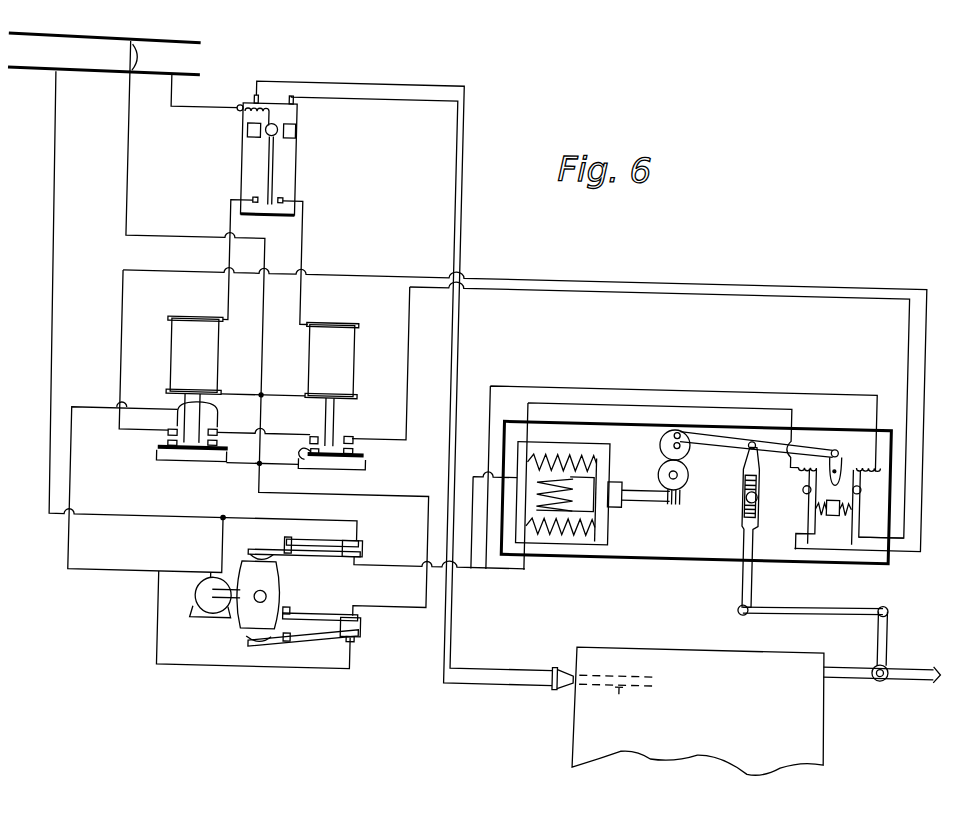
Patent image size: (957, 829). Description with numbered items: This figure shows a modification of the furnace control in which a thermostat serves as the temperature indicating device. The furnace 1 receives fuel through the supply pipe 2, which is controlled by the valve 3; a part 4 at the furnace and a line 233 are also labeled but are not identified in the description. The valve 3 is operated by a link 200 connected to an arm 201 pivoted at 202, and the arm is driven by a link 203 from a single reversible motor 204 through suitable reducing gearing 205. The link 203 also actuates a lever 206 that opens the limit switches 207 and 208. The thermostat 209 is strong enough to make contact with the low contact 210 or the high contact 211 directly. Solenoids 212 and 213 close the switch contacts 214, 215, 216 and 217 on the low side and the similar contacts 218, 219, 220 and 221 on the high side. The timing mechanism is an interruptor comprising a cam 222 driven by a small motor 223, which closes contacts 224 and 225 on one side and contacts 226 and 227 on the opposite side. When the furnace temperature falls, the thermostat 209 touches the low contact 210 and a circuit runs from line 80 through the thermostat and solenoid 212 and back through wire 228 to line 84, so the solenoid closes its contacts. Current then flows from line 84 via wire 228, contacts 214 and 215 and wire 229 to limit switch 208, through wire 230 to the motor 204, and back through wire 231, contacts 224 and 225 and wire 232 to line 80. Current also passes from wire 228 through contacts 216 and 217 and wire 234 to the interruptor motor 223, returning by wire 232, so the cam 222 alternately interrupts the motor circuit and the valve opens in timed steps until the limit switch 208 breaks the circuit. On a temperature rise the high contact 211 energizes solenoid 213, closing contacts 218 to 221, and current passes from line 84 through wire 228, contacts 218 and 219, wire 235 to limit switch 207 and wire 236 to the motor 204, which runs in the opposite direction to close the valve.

The furnace 1 is at (699, 712).
The supply pipe 2 is at (852, 668).
The valve 3 is at (912, 685).
The burner nozzle 4 is at (584, 694).
The line 80 is at (36, 82).
The line 84 is at (182, 46).
The link 200 is at (813, 627).
The arm 201 is at (746, 542).
The pivot 202 is at (748, 495).
The link 203 is at (745, 441).
The single reversible motor 204 is at (600, 459).
The reducing gearing 205 is at (664, 446).
The lever 206 is at (837, 450).
The limit switch 207 is at (872, 508).
The limit switch 208 is at (810, 511).
The thermostat 209 is at (266, 175).
The low contact 210 is at (246, 204).
The high contact 211 is at (281, 203).
The solenoid 212 is at (236, 380).
The solenoid 213 is at (331, 384).
The switch contact 214 is at (166, 452).
The switch contact 215 is at (170, 436).
The switch contact 216 is at (216, 450).
The switch contact 217 is at (217, 436).
The switch contact 218 is at (380, 461).
The switch contact 219 is at (354, 440).
The switch contact 220 is at (300, 455).
The switch contact 221 is at (312, 440).
The cam 222 is at (259, 598).
The small motor 223 is at (214, 617).
The contact 224 is at (293, 557).
The contact 225 is at (288, 544).
The contact 226 is at (292, 618).
The contact 227 is at (294, 645).
The wire 228 is at (261, 369).
The wire 229 is at (522, 399).
The wire 230 is at (662, 481).
The wire 231 is at (440, 521).
The wire 232 is at (206, 323).
The conductor 233 is at (163, 636).
The wire 234 is at (208, 609).
The wire 235 is at (580, 290).
The wire 236 is at (682, 473).